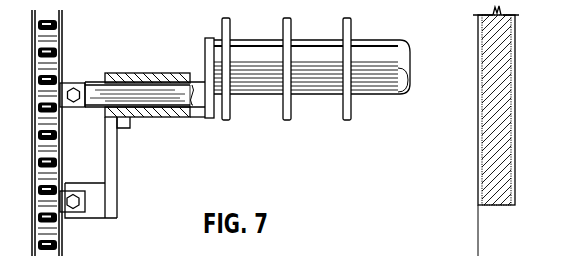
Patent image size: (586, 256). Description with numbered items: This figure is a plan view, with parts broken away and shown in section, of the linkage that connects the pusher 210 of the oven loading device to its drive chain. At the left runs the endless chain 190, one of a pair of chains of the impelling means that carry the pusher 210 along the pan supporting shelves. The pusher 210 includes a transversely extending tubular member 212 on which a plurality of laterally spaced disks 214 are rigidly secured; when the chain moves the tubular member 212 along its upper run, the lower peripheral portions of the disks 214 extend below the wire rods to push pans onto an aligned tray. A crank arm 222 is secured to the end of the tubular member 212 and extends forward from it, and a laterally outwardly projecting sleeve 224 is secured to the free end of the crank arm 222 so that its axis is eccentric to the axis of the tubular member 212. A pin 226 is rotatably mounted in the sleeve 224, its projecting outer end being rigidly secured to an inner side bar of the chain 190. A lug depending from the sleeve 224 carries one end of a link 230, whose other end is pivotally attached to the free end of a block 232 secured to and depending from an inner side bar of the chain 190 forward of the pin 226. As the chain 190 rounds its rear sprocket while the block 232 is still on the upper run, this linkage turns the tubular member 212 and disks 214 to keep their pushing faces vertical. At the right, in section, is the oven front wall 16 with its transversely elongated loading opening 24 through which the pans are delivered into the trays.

The front wall 16 is at (479, 133).
The loading opening 24 is at (493, 223).
The endless chain 190 is at (63, 44).
The pusher 210 is at (315, 95).
The tubular member 212 is at (370, 95).
The disks 214 is at (228, 98).
The crank arm 222 is at (205, 67).
The sleeve 224 is at (180, 117).
The pin 226 is at (93, 80).
The link 230 is at (118, 157).
The block 232 is at (88, 218).